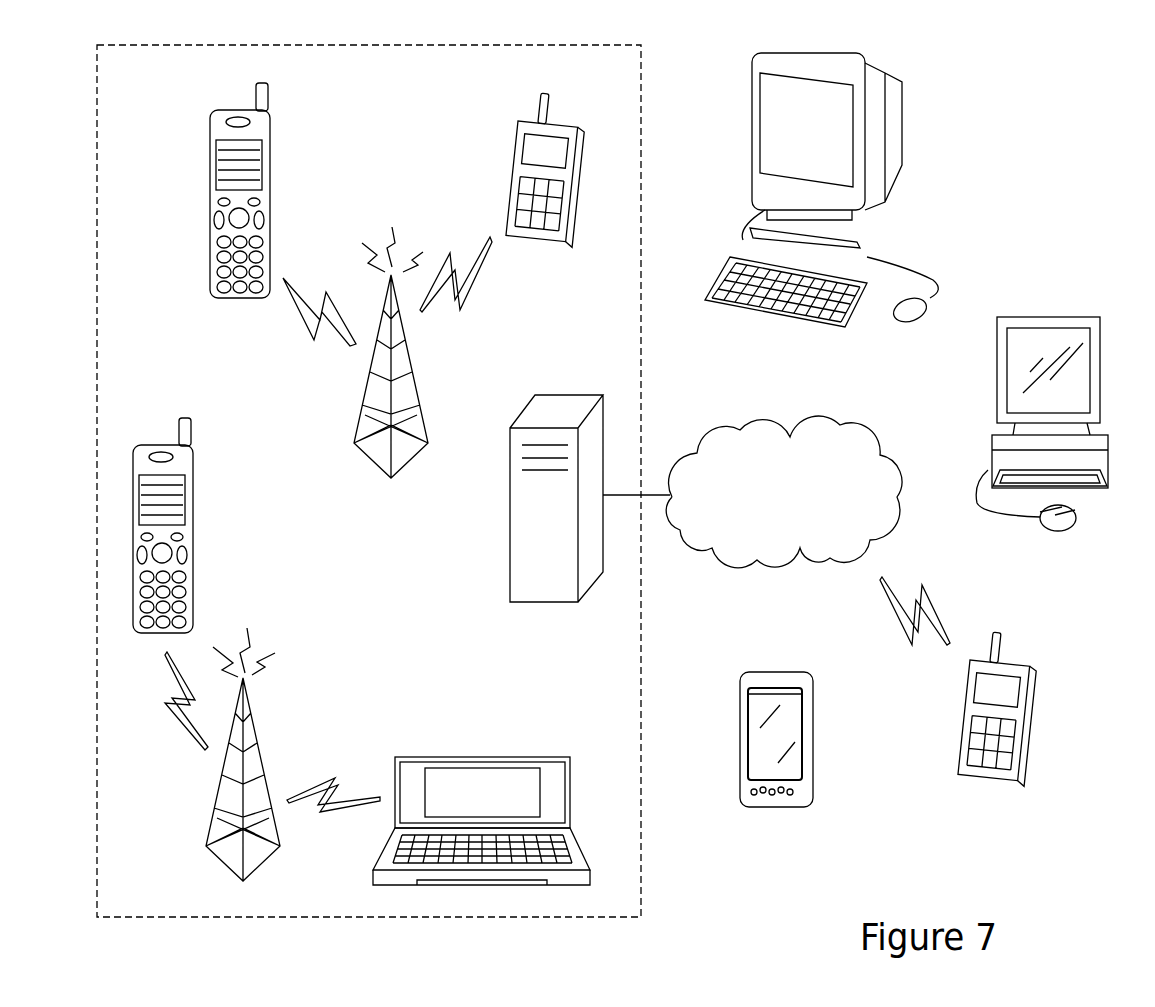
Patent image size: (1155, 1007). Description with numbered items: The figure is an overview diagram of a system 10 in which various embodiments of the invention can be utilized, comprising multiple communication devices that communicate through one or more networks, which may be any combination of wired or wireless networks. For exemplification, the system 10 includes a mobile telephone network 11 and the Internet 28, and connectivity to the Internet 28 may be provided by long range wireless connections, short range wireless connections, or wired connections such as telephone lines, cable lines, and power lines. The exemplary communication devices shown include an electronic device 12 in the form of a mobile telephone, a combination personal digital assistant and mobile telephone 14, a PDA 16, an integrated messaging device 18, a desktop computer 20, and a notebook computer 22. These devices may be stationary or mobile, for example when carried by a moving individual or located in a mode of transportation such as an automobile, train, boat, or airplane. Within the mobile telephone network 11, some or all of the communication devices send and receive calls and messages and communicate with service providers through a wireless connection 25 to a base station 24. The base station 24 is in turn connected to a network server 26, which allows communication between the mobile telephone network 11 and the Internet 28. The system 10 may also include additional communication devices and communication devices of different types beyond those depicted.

The system 10 is at (1095, 615).
The mobile telephone network 11 is at (139, 96).
The electronic device 12 is at (269, 203).
The combination personal digital assistant and mobile telephone 14 is at (478, 762).
The PDA 16 is at (813, 733).
The integrated messaging device 18 is at (515, 178).
The desktop computer 20 is at (903, 118).
The notebook computer 22 is at (1048, 316).
The base station 24 is at (408, 360).
The wireless connection 25 is at (194, 727).
The network server 26 is at (510, 514).
The Internet 28 is at (823, 414).